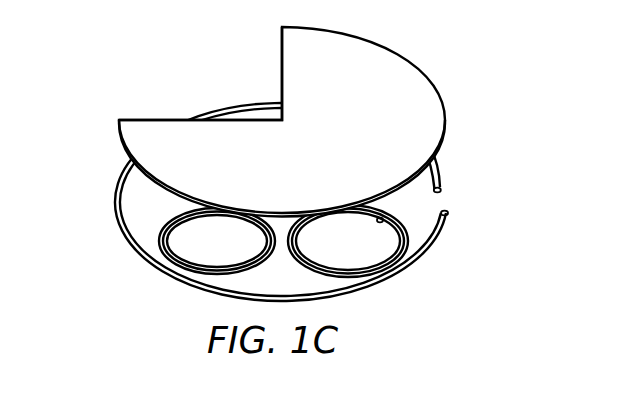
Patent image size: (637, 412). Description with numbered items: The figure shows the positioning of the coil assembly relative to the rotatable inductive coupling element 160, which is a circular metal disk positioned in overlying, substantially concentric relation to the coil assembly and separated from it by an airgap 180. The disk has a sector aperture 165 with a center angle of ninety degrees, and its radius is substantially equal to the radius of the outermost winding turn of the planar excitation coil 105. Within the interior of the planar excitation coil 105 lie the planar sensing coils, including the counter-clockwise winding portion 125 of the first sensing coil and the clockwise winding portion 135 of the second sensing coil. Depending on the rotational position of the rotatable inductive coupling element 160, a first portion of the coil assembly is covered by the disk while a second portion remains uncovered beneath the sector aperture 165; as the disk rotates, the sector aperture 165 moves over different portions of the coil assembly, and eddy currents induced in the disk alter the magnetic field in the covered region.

The rotatable inductive coupling element 160 is at (409, 61).
The sector aperture 165 is at (223, 74).
The airgap 180 is at (121, 163).
The planar excitation coil 105 is at (441, 190).
The counter-clockwise winding portion 125 is at (158, 257).
The clockwise winding portion 135 is at (406, 253).